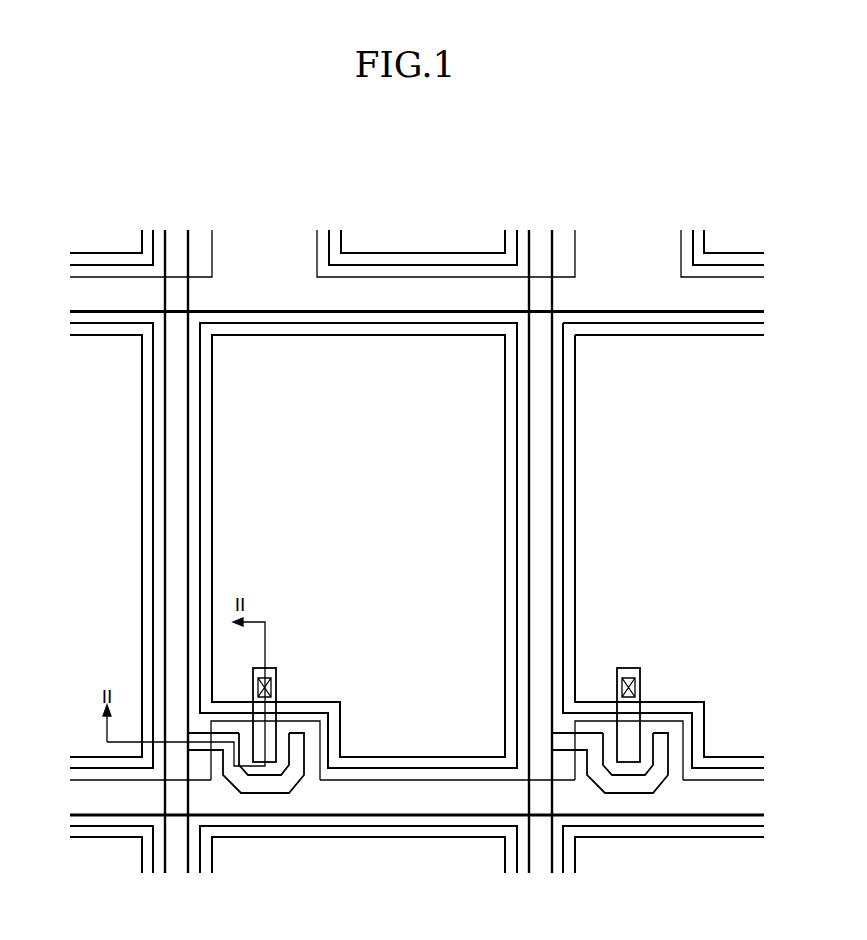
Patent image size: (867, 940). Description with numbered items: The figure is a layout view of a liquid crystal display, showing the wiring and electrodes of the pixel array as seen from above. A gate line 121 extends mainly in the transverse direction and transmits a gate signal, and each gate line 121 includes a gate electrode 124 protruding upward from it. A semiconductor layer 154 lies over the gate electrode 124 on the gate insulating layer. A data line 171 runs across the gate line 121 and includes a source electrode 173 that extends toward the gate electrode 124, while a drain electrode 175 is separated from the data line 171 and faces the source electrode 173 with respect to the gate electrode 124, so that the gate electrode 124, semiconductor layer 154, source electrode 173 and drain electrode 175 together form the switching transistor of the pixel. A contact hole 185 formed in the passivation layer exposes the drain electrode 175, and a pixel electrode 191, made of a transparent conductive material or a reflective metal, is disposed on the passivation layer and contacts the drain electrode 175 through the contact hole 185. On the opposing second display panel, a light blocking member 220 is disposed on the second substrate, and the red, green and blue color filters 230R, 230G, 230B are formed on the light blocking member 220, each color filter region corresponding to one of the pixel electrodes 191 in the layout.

The gate line 121 is at (404, 780).
The gate electrode 124 is at (320, 750).
The semiconductor layer 154 is at (282, 733).
The data line 171 is at (166, 508).
The source electrode 173 is at (268, 793).
The drain electrode 175 is at (277, 695).
The contact hole 185 is at (277, 678).
The pixel electrode 191 is at (201, 383).
The light blocking member 220 is at (212, 428).
The red color filter 230R is at (113, 523).
The green color filter 230G is at (386, 523).
The blue color filter 230B is at (709, 523).